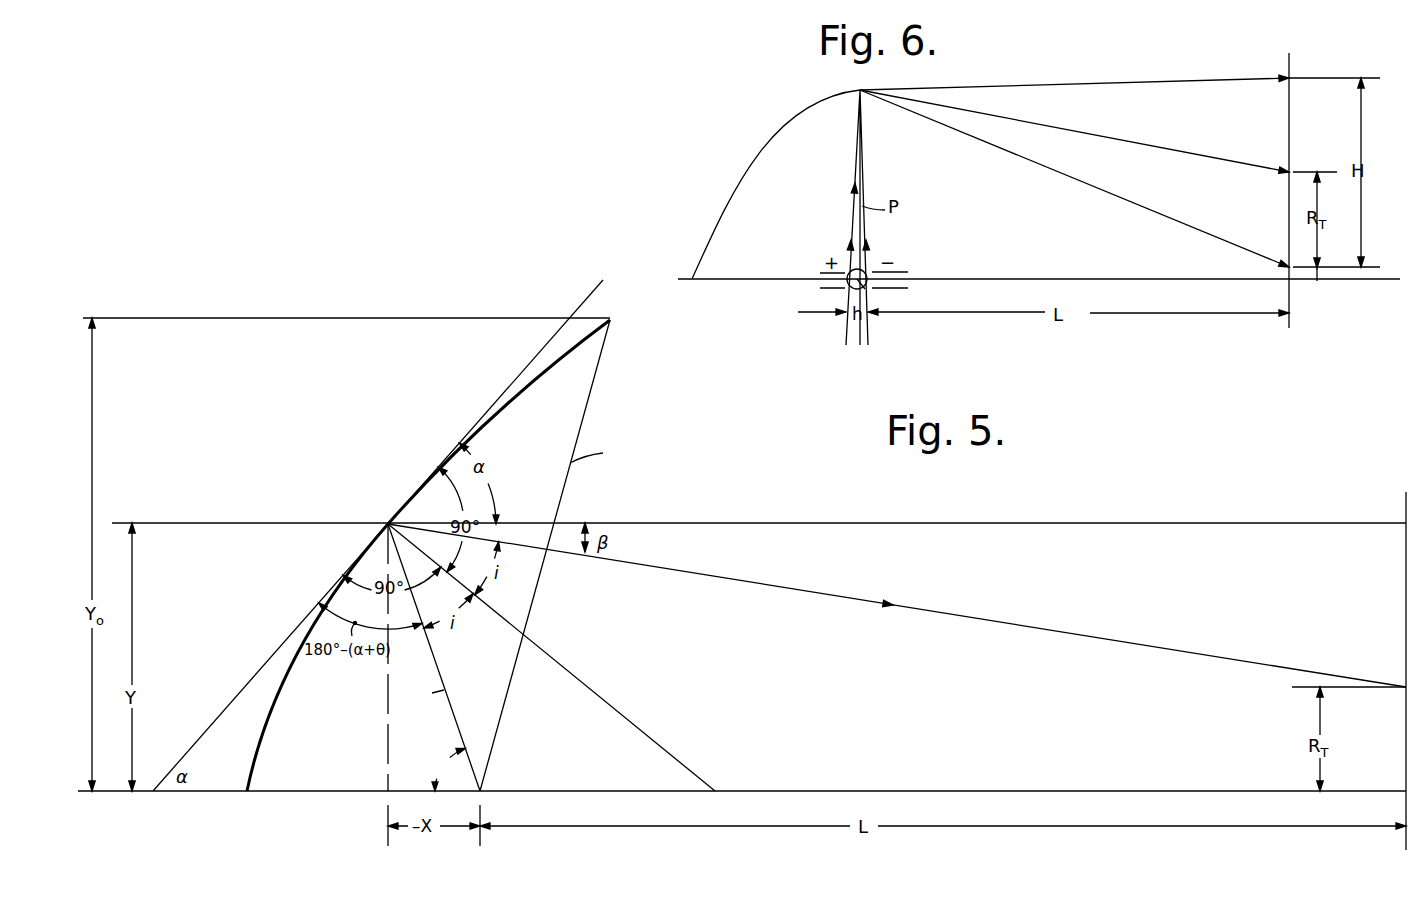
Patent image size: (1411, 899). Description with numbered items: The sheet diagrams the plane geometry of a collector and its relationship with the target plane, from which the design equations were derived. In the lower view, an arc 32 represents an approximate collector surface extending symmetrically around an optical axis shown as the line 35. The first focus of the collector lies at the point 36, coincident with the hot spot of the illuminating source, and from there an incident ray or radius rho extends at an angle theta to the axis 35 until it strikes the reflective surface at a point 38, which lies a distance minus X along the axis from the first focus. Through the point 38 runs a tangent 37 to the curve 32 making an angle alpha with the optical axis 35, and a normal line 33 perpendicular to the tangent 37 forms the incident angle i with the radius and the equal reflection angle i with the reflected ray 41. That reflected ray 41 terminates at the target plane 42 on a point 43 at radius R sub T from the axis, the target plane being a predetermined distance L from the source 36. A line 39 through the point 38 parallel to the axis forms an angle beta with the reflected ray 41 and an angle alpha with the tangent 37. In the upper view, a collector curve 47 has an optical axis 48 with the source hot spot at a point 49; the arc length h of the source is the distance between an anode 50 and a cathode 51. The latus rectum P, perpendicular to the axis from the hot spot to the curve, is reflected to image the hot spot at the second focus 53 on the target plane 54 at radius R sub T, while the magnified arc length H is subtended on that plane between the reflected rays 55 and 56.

In FIG. 5, the arc 32 is at (604, 330).
In FIG. 5, the normal line 33 is at (648, 737).
In FIG. 5, the optical axis 35 is at (971, 792).
In FIG. 5, the first focus 36 is at (482, 788).
In FIG. 5, the tangent 37 is at (298, 627).
In FIG. 5, the point 38 is at (388, 520).
In FIG. 5, the line 39 is at (958, 523).
In FIG. 5, the reflected ray 41 is at (1031, 624).
In FIG. 5, the target plane 42 is at (1406, 503).
In FIG. 5, the point 43 is at (1404, 685).
In FIG. 6, the collector curve 47 is at (710, 228).
In FIG. 6, the optical axis 48 is at (733, 280).
In FIG. 6, the point 49 is at (866, 283).
In FIG. 6, the anode 50 is at (827, 291).
In FIG. 6, the cathode 51 is at (908, 272).
In FIG. 6, the second focus 53 is at (1287, 174).
In FIG. 6, the target plane 54 is at (1290, 63).
In FIG. 6, the reflected ray 55 is at (1135, 82).
In FIG. 6, the reflected ray 56 is at (1090, 186).